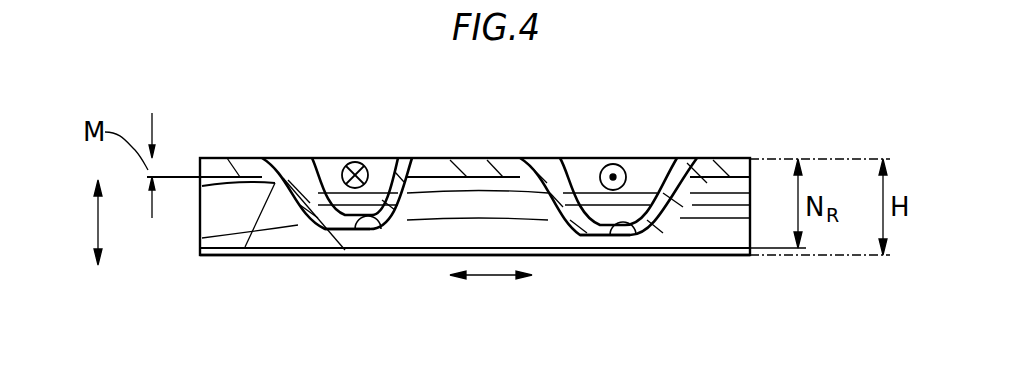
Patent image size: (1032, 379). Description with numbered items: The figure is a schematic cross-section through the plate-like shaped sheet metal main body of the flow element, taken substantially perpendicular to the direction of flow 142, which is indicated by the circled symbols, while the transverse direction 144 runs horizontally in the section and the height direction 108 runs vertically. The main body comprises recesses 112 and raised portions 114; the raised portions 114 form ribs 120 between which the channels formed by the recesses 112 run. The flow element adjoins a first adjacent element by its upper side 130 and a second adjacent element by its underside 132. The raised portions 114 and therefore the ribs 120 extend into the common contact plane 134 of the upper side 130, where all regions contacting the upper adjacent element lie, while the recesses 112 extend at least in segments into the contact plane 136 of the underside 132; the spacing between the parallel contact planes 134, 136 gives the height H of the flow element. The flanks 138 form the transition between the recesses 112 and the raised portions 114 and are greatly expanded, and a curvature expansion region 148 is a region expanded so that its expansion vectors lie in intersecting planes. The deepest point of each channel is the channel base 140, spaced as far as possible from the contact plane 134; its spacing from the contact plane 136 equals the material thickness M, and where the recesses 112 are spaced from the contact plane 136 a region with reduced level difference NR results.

The height direction 108 is at (98, 222).
The recesses 112 is at (350, 248).
The raised portions 114 is at (246, 158).
The ribs 120 is at (473, 158).
The upper side 130 is at (213, 158).
The underside 132 is at (231, 255).
The contact plane of the upper side 134 is at (819, 158).
The contact plane of the underside 136 is at (819, 258).
The flanks 138 is at (316, 165).
The channel base 140 is at (378, 244).
The direction of flow 142 is at (353, 162).
The transverse direction 144 is at (490, 277).
The curvature expansion region 148 is at (670, 150).